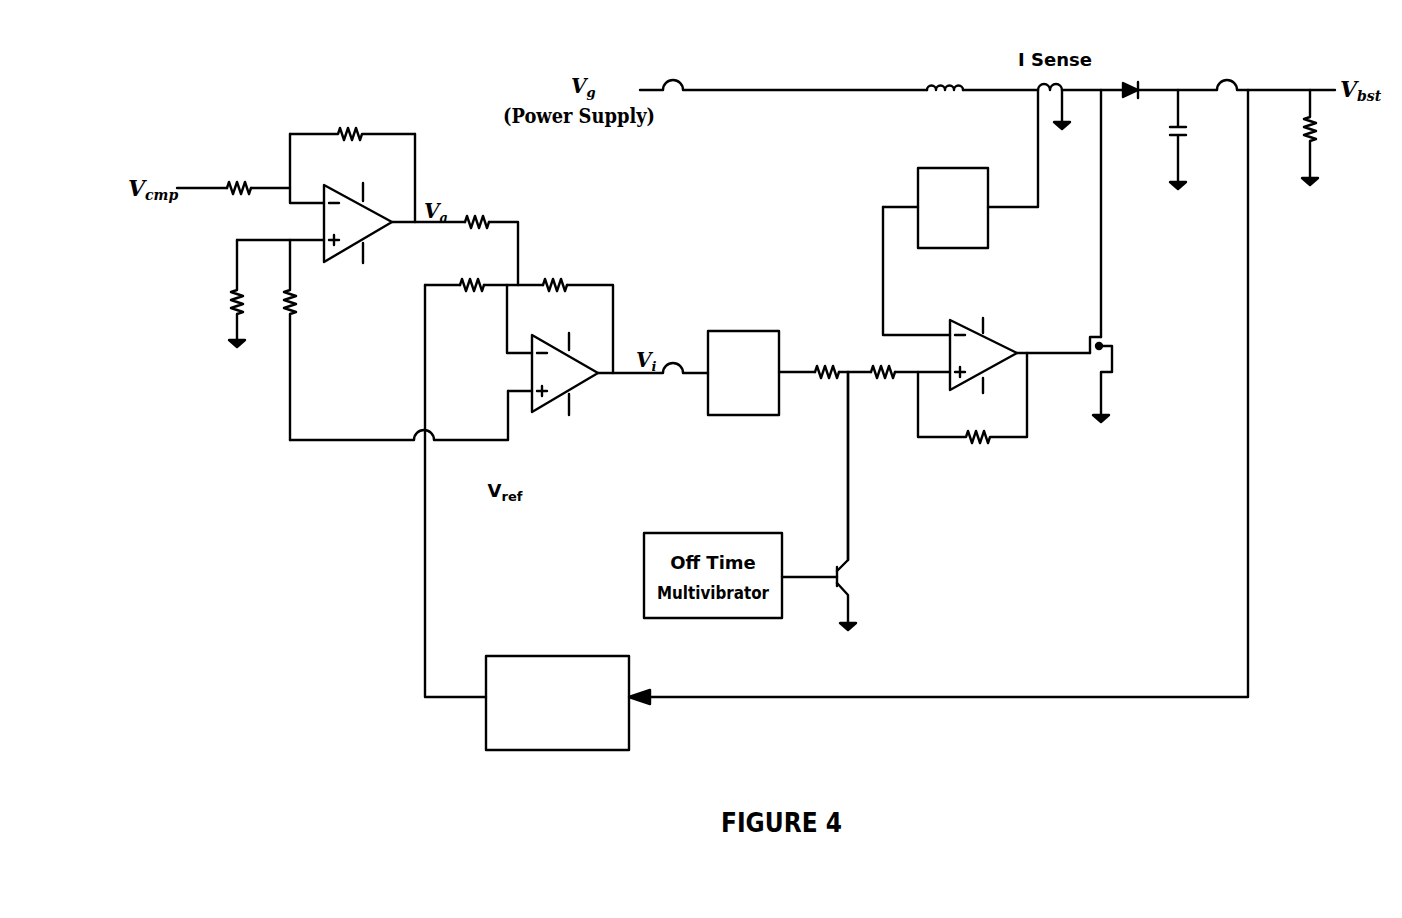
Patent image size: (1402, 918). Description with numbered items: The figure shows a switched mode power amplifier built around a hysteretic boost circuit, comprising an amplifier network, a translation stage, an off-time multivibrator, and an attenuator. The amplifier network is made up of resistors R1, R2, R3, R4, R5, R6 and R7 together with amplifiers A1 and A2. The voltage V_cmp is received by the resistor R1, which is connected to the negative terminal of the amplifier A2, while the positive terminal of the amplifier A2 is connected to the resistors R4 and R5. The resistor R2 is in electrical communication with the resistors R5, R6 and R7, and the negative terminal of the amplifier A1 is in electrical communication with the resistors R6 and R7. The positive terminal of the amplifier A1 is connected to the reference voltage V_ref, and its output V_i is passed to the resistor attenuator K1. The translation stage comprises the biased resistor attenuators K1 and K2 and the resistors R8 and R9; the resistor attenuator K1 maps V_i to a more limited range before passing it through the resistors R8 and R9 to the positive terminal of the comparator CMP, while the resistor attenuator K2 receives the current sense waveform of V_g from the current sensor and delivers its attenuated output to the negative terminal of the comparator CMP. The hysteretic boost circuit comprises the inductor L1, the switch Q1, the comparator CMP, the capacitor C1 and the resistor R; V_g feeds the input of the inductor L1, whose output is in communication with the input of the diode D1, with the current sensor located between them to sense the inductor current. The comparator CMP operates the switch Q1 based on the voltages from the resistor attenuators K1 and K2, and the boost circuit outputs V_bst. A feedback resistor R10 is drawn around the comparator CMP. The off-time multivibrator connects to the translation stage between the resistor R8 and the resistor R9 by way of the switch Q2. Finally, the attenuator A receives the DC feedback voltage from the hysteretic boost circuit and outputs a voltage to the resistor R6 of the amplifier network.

The resistor R1 is at (239, 174).
The resistor R2 is at (352, 120).
The resistor R3 is at (219, 293).
The resistor R4 is at (305, 340).
The resistor R5 is at (477, 208).
The resistor R6 is at (472, 271).
The resistor R7 is at (556, 271).
The resistor R8 is at (827, 359).
The resistor R9 is at (883, 359).
The hysteresis resistor R10 is at (972, 414).
The amplifier A1 is at (563, 393).
The amplifier A2 is at (358, 237).
The resistor attenuator K1 is at (743, 373).
The resistor attenuator K2 is at (953, 208).
The comparator CMP is at (983, 368).
The inductor L1 is at (945, 69).
The diode D1 is at (1143, 73).
The capacitor C1 is at (1161, 139).
The resistor R is at (1298, 137).
The switch Q1 is at (1119, 379).
The switch Q2 is at (860, 501).
The attenuator A is at (557, 703).